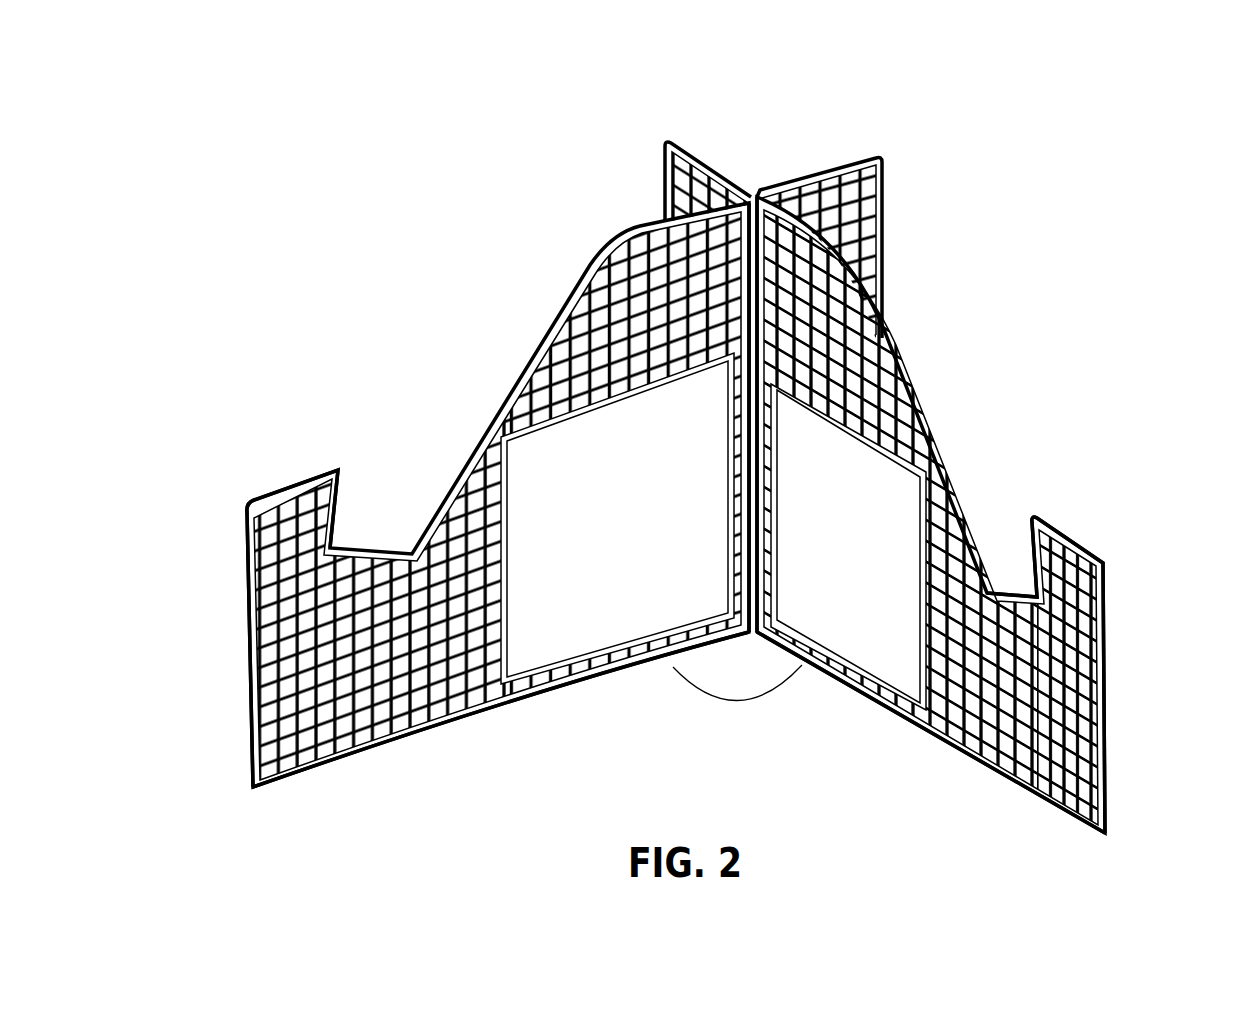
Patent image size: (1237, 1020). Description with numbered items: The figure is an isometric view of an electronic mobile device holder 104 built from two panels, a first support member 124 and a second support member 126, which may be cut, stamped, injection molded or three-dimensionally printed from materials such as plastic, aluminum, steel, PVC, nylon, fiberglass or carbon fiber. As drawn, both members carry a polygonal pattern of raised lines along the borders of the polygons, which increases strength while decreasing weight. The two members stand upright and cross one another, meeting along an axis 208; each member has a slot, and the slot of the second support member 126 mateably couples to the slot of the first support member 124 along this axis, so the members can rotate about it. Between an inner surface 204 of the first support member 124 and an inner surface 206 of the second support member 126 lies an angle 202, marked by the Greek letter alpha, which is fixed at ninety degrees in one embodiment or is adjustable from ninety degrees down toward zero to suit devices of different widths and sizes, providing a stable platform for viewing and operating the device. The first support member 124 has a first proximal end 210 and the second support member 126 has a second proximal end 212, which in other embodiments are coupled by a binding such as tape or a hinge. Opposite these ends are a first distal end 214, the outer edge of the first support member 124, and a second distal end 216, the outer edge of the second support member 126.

The electronic mobile device holder 104 is at (680, 448).
The first support member 124 is at (466, 500).
The second support member 126 is at (972, 520).
The angle 202 is at (736, 701).
The inner surface of the first support member 204 is at (508, 710).
The inner surface of the second support member 206 is at (870, 708).
The axis 208 is at (747, 150).
The first proximal end 210 is at (889, 208).
The second proximal end 212 is at (651, 197).
The first distal end 214 is at (247, 656).
The second distal end 216 is at (1110, 661).